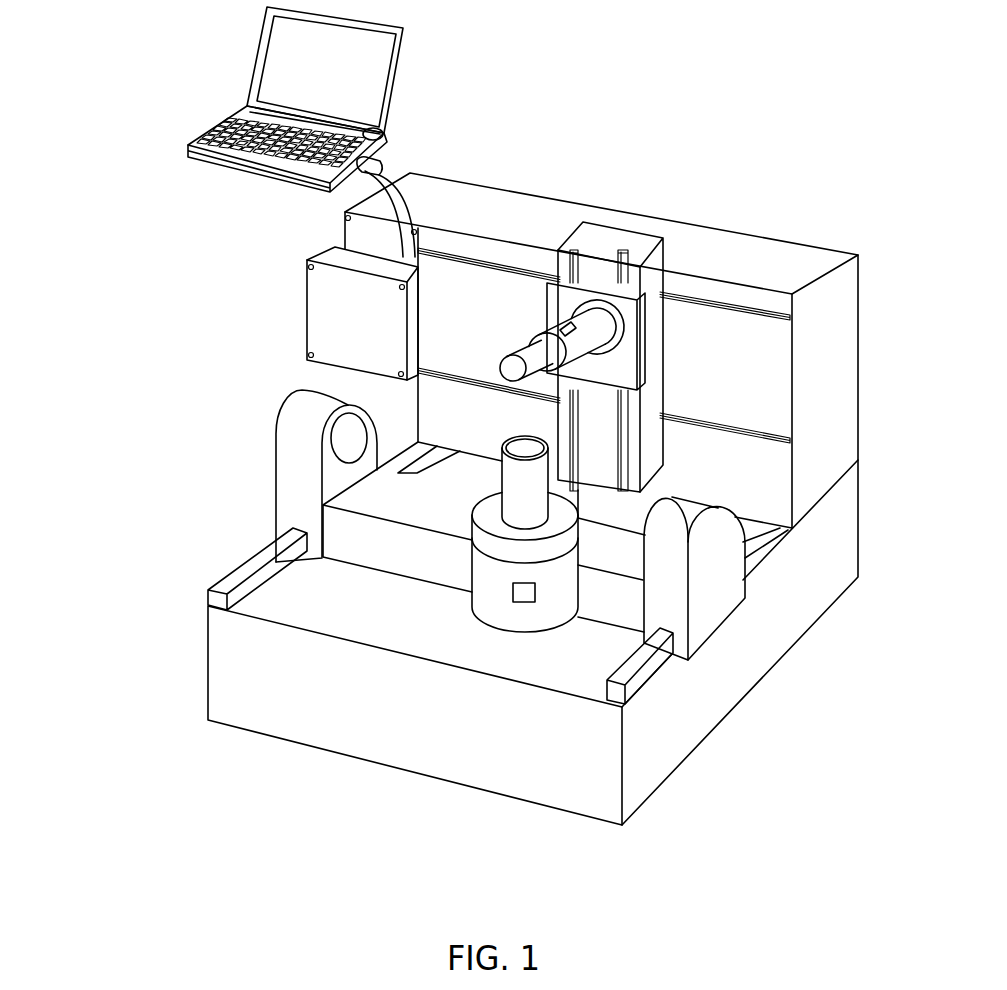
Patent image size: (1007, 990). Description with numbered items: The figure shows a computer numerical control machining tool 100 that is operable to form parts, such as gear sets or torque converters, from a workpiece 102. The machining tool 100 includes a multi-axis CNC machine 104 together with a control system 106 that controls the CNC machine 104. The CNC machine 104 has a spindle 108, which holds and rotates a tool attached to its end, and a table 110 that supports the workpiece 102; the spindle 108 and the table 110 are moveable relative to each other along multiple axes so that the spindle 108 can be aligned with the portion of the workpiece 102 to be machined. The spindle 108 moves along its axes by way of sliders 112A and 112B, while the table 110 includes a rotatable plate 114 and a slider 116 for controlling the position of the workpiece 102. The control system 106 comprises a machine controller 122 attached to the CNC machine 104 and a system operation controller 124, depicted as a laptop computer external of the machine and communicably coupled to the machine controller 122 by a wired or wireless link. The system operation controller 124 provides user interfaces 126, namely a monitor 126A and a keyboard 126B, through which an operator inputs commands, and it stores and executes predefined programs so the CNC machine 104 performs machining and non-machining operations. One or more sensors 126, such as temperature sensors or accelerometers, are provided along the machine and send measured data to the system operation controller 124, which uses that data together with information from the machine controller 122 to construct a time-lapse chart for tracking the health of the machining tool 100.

The computer numerical control machining tool 100 is at (788, 102).
The workpiece 102 is at (512, 486).
The multi-axis CNC machine 104 is at (822, 237).
The control system 106 is at (417, 117).
The spindle 108 is at (600, 330).
The table 110 is at (737, 618).
The slider 112A is at (505, 262).
The slider 112B is at (632, 268).
The rotatable plate 114 is at (562, 550).
The slider 116 is at (273, 512).
The machine controller 122 is at (312, 308).
The system operation controller 124 is at (214, 169).
The sensor 126 is at (109, 5).
The monitor 126A is at (262, 48).
The keyboard 126B is at (222, 127).